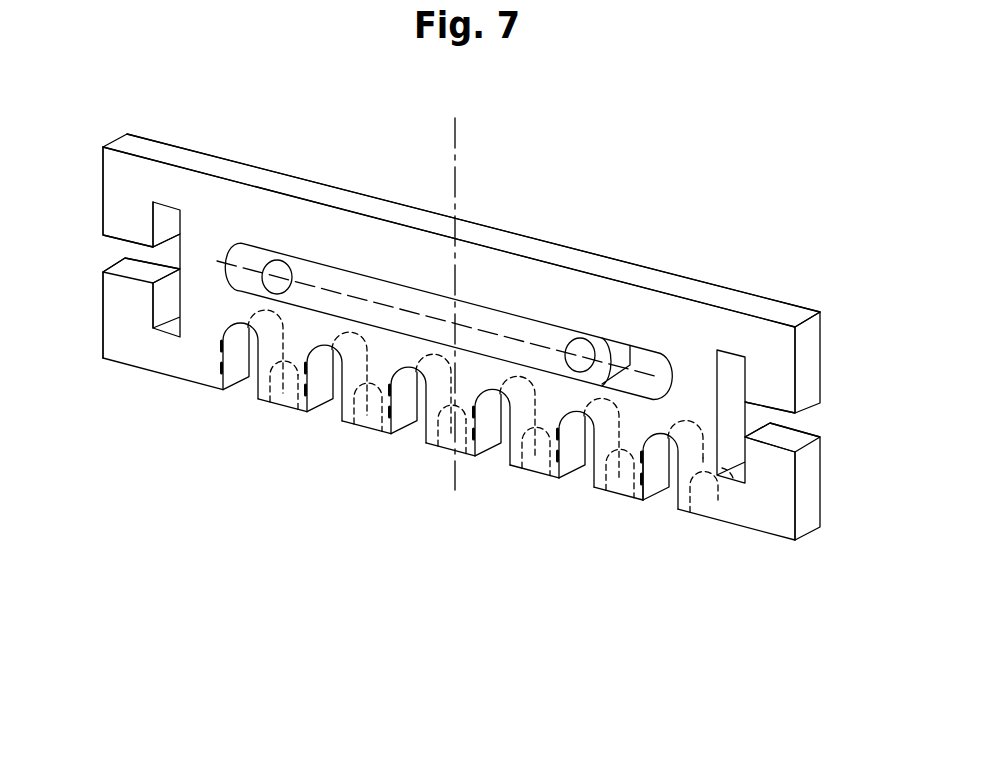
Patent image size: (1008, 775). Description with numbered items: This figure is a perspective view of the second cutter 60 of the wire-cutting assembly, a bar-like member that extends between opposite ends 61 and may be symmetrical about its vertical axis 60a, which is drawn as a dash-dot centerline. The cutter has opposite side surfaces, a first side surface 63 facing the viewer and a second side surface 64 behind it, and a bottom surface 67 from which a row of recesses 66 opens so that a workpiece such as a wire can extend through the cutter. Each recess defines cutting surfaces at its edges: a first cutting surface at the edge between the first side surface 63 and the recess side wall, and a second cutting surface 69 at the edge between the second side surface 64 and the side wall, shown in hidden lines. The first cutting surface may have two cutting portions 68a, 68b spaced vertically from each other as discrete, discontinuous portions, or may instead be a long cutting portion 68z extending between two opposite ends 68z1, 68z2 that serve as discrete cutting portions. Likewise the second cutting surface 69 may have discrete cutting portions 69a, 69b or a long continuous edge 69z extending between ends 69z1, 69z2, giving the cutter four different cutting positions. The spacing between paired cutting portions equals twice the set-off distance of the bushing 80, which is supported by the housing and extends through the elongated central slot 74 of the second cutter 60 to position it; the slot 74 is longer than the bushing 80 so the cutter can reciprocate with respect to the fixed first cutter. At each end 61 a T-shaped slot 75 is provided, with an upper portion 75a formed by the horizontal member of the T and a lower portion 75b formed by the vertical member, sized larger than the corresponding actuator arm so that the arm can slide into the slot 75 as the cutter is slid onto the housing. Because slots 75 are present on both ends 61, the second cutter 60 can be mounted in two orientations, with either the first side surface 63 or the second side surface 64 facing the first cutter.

The second cutter 60 is at (571, 258).
The vertical axis 60a is at (460, 149).
The ends 61 is at (135, 147).
The first side surface 63 is at (290, 217).
The second side surface 64 is at (644, 266).
The recesses 66 is at (417, 404).
The bottom surface 67 is at (522, 263).
The first cutting portion 68a is at (220, 375).
The second cutting portion 68b is at (222, 350).
The long cutting portion 68z is at (647, 468).
The end of long cutting portion 68z1 is at (636, 482).
The end of long cutting portion 68z2 is at (638, 455).
The second cutting surface 69 is at (287, 323).
The first cutting portion of second cutting surface 69a is at (270, 403).
The second cutting portion of second cutting surface 69b is at (297, 406).
The long continuous cutting edge 69z is at (718, 500).
The end of long cutting edge 69z1 is at (703, 460).
The end of long cutting edge 69z2 is at (733, 478).
The central slot 74 is at (652, 372).
The slot 75 is at (172, 252).
The upper portion of slot 75a is at (164, 222).
The lower portion of slot 75b is at (132, 272).
The bushing 80 is at (375, 283).